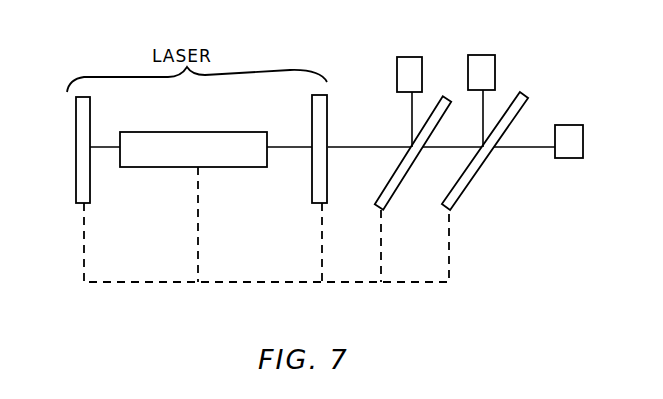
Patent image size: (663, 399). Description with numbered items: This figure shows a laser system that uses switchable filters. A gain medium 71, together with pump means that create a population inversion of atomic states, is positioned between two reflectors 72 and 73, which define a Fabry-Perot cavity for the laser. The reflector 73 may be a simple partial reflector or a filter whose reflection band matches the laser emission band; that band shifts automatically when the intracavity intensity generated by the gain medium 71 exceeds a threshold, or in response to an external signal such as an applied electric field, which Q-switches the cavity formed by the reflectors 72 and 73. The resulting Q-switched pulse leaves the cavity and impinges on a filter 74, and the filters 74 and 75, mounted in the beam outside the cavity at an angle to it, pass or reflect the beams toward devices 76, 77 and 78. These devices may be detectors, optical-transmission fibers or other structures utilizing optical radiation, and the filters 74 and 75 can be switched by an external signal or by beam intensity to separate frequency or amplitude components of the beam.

The gain medium 71 is at (182, 132).
The reflector 72 is at (91, 111).
The reflector 73 is at (329, 114).
The filter 74 is at (395, 191).
The filter 75 is at (468, 188).
The device 76 is at (422, 63).
The device 77 is at (497, 66).
The device 78 is at (583, 128).